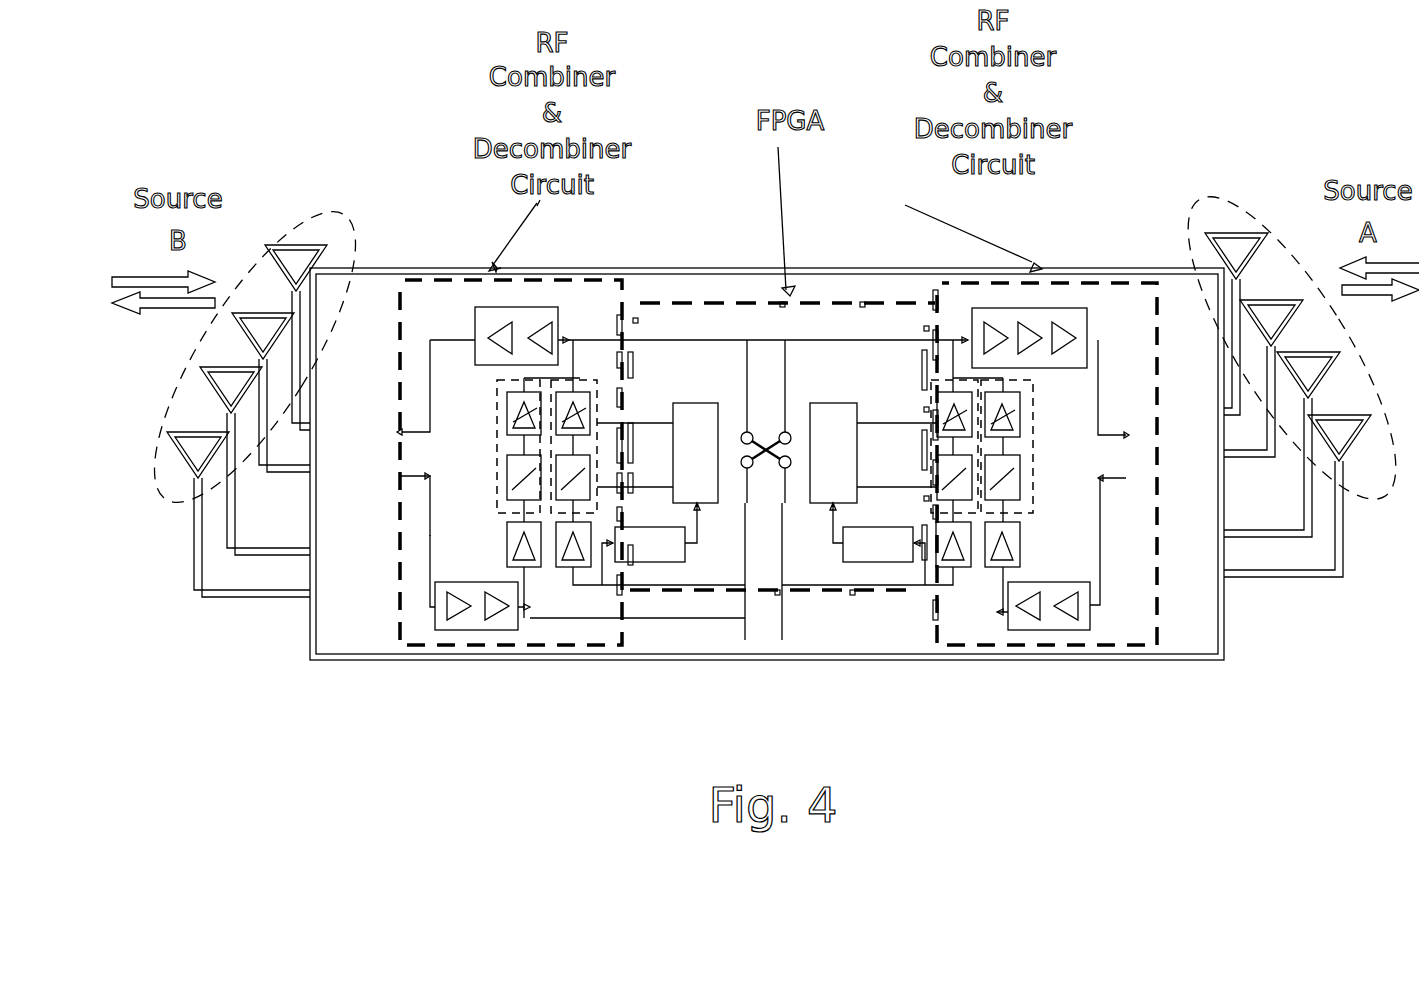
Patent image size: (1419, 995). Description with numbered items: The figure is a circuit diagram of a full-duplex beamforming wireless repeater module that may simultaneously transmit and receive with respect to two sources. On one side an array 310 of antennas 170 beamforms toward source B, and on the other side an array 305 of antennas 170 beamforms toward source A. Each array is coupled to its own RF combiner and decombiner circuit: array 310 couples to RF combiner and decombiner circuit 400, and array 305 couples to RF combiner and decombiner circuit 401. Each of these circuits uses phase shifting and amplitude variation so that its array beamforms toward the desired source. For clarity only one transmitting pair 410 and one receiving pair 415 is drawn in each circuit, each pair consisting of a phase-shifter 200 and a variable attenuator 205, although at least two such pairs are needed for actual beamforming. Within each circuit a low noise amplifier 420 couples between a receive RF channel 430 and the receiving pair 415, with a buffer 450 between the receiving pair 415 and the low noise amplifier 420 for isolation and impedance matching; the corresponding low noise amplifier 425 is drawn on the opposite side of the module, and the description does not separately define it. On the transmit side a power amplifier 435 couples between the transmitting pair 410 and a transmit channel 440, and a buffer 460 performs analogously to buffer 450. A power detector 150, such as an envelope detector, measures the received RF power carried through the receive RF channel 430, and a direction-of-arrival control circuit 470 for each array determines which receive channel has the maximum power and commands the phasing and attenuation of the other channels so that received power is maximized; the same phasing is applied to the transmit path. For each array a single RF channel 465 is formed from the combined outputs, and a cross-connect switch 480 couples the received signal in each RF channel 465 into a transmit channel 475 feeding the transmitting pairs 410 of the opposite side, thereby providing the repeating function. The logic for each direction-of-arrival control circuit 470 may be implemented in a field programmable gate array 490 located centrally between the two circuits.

The power detector 150 is at (640, 565).
The antenna 170 is at (320, 240).
The phase-shifter 200 is at (500, 504).
The variable attenuator 205 is at (545, 423).
The array 305 is at (1245, 160).
The array 310 is at (288, 186).
The RF combiner and decombiner circuit 400 is at (556, 268).
The RF combiner and decombiner circuit 401 is at (972, 268).
The transmitting pair 410 is at (587, 380).
The receiving pair 415 is at (497, 483).
The low noise amplifier 420 is at (1045, 622).
The low noise amplifier 425 is at (455, 626).
The receive RF channel 430 is at (430, 535).
The power amplifier 435 is at (480, 335).
The transmit channel 440 is at (402, 385).
The buffer 450 is at (505, 540).
The buffer 460 is at (570, 565).
The RF channel 465 is at (700, 330).
The direction-of-arrival control circuit 470 is at (690, 403).
The transmit channel 475 is at (745, 598).
The cross switch 480 is at (770, 432).
The field programmable gate array 490 is at (737, 274).